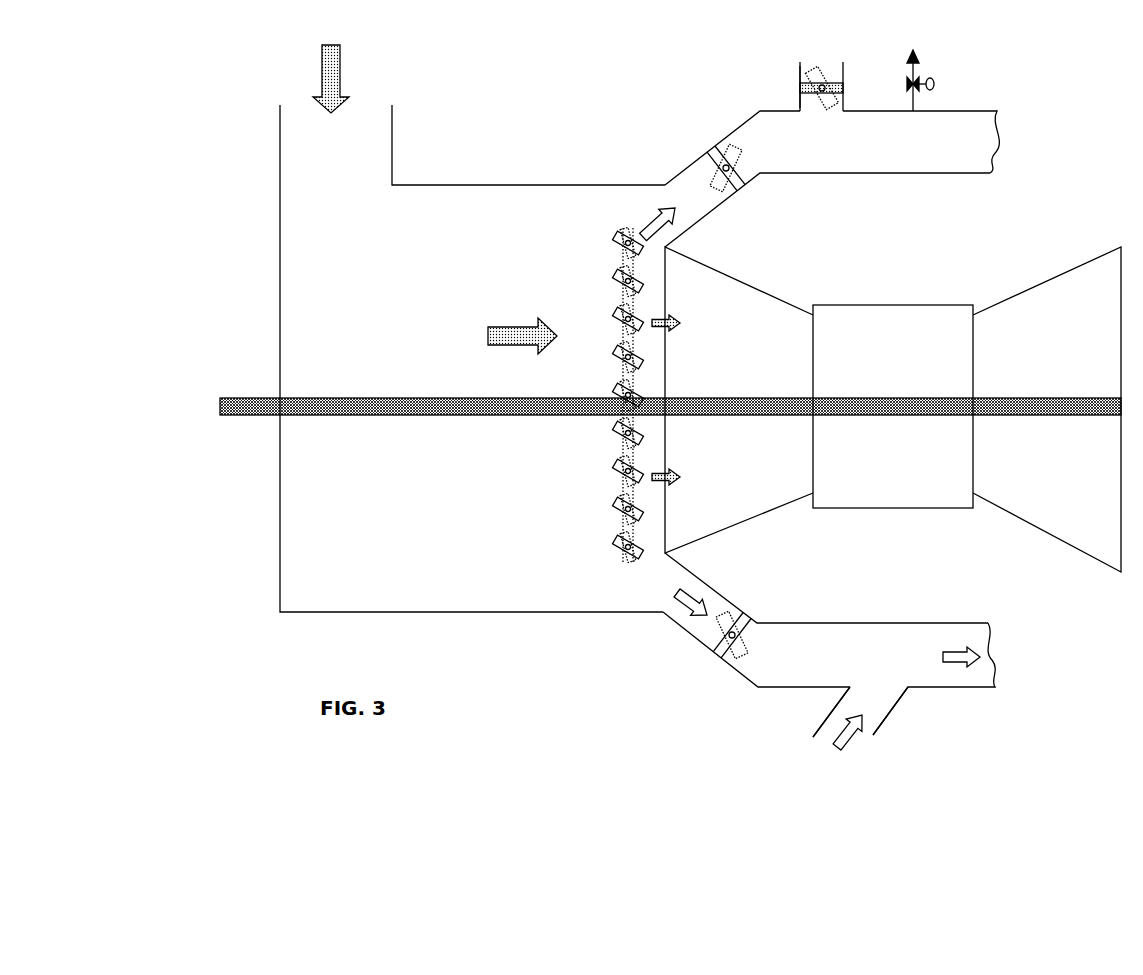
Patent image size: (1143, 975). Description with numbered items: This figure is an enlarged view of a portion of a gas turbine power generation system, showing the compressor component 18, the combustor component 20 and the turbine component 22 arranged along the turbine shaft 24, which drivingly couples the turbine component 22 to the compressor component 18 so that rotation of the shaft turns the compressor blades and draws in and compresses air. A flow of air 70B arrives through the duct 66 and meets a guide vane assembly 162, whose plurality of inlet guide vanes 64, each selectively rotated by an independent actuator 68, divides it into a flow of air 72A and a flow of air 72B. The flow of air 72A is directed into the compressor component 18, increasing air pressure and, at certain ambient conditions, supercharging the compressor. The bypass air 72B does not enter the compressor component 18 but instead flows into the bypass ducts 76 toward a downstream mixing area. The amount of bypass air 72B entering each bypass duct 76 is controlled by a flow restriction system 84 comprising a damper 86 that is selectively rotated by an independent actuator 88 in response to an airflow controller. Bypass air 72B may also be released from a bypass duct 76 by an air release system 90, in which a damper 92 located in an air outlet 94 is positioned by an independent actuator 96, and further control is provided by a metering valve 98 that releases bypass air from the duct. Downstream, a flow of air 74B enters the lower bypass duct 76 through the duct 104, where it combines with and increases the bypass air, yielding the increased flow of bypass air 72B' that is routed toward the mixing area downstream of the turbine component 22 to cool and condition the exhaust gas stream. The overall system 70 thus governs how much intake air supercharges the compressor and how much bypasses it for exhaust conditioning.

The compressor component 18 is at (739, 400).
The combustor component 20 is at (893, 406).
The turbine component 22 is at (1047, 409).
The turbine shaft 24 is at (413, 398).
The inlet guide vane 64 is at (642, 553).
The duct 66 is at (393, 150).
The actuator 68 is at (627, 553).
The bleed air system 70 is at (642, 80).
The flow of air 70B is at (320, 78).
The flow of air 72A is at (680, 476).
The bypass air 72B is at (660, 408).
The increased flow of bypass air 72B' is at (950, 693).
The flow of air 74B is at (843, 752).
The bypass duct 76 is at (698, 225).
The flow restriction system 84 is at (757, 198).
The damper 86 is at (738, 182).
The actuator 88 is at (722, 169).
The air release system 90 is at (851, 87).
The damper 92 is at (808, 95).
The air outlet 94 is at (808, 59).
The actuator 96 is at (822, 84).
The metering valve 98 is at (913, 78).
The duct 104 is at (827, 722).
The guide vane assembly 162 is at (600, 457).